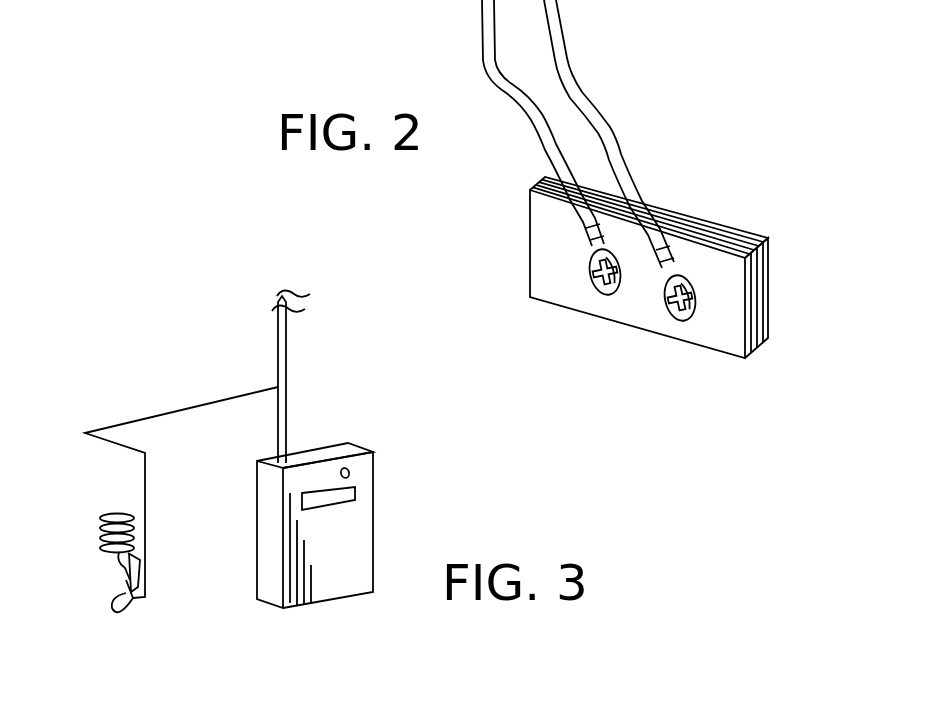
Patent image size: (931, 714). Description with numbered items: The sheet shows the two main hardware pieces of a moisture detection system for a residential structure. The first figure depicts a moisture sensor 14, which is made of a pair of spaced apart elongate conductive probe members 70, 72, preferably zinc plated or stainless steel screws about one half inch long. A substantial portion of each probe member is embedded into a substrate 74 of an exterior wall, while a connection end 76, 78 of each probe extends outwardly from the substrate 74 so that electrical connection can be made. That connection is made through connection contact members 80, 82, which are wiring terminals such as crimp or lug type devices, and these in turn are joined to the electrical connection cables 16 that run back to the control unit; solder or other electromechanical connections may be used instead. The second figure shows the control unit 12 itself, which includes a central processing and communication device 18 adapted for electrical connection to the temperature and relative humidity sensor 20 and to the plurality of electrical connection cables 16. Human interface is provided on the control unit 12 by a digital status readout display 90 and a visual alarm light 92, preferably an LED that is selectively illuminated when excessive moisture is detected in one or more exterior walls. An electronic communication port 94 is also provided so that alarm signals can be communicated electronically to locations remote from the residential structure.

In FIG. 3, the control unit 12 is at (269, 487).
In FIG. 2, the moisture sensor 14 is at (648, 248).
In FIG. 2, the electrical connection cables 16 is at (564, 134).
In FIG. 3, the electrical connection cables 16 is at (267, 355).
In FIG. 3, the central processing and communication device 18 is at (349, 534).
In FIG. 3, the temperature and relative humidity sensor 20 is at (103, 512).
In FIG. 2, the conductive probe member 70 is at (607, 297).
In FIG. 2, the conductive probe member 72 is at (687, 327).
In FIG. 2, the substrate 74 is at (713, 257).
In FIG. 2, the connection end 76 is at (557, 273).
In FIG. 2, the connection end 78 is at (707, 297).
In FIG. 2, the connection contact member 80 is at (587, 232).
In FIG. 2, the connection contact member 82 is at (673, 250).
In FIG. 3, the digital status readout display 90 is at (373, 492).
In FIG. 3, the visual alarm light 92 is at (353, 472).
In FIG. 3, the electronic communication port 94 is at (318, 445).